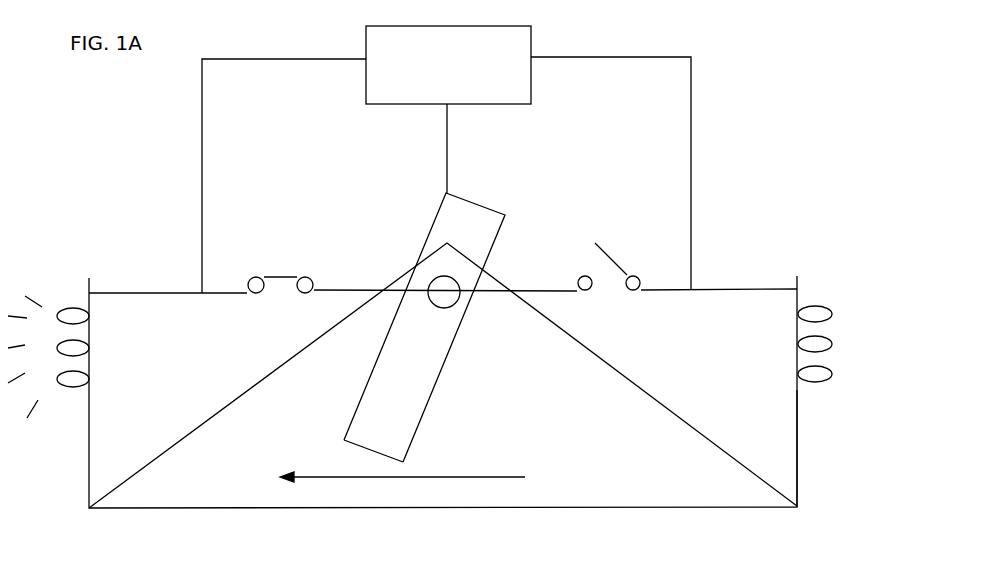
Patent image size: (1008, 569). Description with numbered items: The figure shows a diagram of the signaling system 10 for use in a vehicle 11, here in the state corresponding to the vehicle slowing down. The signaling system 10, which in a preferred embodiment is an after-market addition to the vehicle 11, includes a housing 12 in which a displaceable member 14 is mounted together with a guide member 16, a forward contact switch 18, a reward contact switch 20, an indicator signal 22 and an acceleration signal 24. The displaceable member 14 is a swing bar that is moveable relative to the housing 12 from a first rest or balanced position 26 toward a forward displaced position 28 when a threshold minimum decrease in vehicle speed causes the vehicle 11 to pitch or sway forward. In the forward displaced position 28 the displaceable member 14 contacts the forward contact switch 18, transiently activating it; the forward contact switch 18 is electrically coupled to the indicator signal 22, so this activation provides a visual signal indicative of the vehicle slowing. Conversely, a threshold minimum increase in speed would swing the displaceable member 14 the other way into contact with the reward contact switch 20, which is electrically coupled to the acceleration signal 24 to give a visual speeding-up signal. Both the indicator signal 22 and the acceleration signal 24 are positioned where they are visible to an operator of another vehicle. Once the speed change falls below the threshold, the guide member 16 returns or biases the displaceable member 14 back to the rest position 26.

The signaling system 10 is at (39, 387).
The vehicle 11 is at (499, 467).
The housing 12 is at (837, 448).
The displaceable member 14 is at (437, 327).
The guide member 16 is at (446, 159).
The forward contact switch 18 is at (281, 253).
The reward contact switch 20 is at (601, 236).
The indicator signal 22 is at (56, 291).
The acceleration signal 24 is at (839, 305).
The rest position 26 is at (443, 375).
The forward displaced position 28 is at (385, 430).